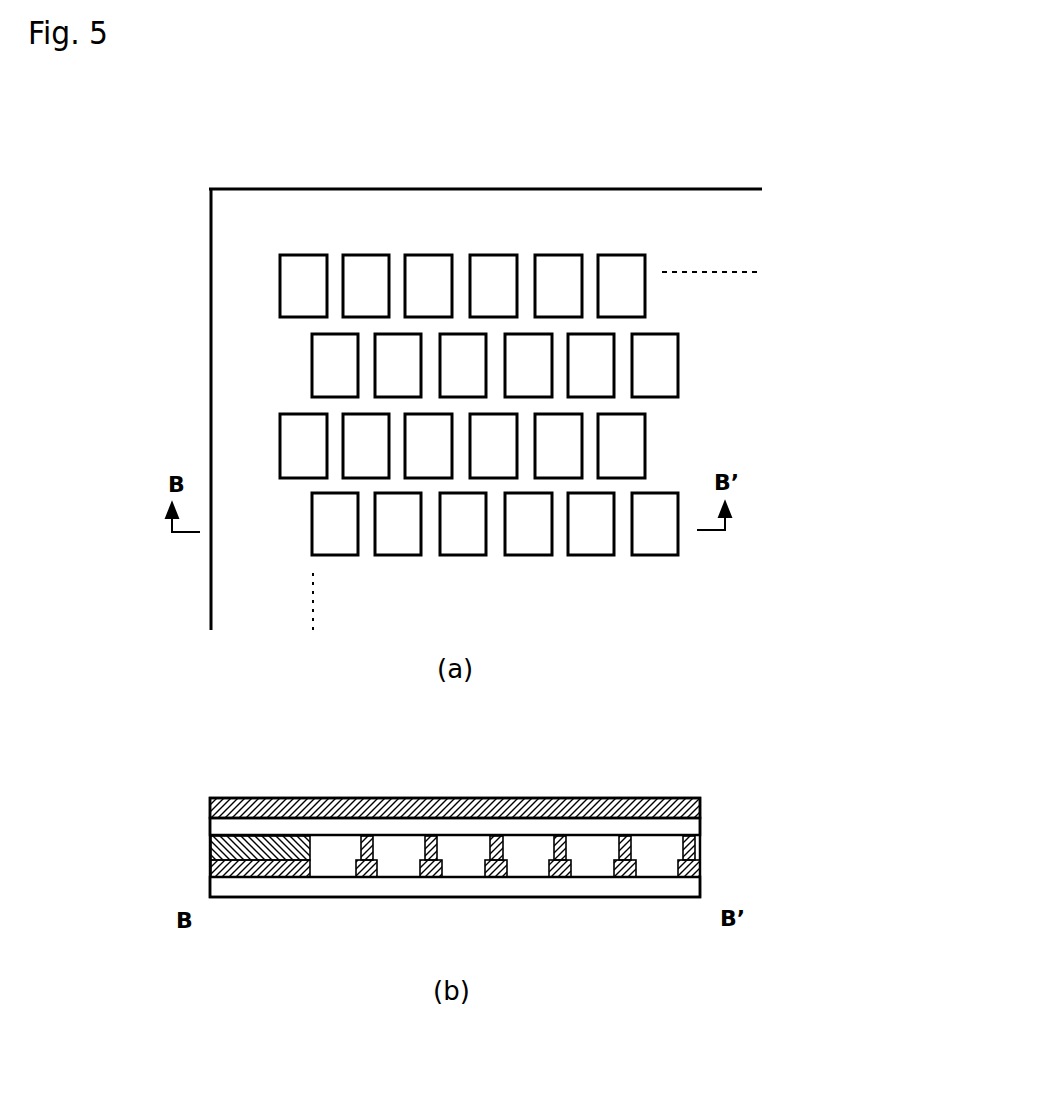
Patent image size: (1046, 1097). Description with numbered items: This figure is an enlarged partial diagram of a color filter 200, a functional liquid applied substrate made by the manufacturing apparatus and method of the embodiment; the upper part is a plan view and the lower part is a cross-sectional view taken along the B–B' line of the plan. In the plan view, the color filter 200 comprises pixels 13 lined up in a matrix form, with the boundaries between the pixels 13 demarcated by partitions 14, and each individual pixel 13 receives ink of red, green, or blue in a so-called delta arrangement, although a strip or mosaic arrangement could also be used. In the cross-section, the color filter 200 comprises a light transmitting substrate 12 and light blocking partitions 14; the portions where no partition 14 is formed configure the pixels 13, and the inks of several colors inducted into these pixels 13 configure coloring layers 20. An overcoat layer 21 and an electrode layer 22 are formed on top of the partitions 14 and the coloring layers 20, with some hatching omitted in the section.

The color filter 200 is at (531, 189).
The pixels 13 is at (678, 353).
The partitions 14 is at (696, 318).
The electrode layer 22 is at (700, 806).
The overcoat layer 21 is at (700, 826).
The light transmitting substrate 12 is at (700, 887).
The coloring layers 20 is at (463, 856).